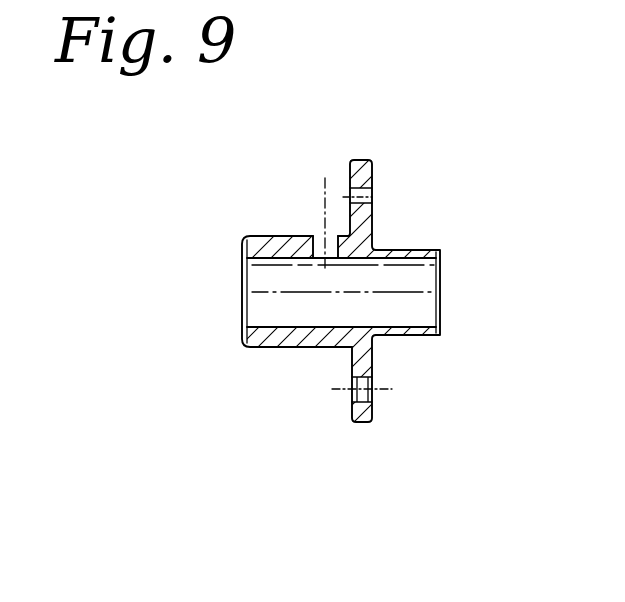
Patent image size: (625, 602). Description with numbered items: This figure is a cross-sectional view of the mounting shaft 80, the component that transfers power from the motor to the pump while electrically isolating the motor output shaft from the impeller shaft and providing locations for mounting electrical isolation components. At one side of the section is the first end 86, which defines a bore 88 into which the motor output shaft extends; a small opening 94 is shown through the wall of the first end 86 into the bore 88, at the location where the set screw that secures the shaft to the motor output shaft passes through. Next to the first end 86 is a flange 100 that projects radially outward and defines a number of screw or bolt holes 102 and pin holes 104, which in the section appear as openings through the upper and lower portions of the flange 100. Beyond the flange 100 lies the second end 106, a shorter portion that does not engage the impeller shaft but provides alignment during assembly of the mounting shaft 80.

The mounting shaft 80 is at (352, 315).
The first end 86 is at (278, 343).
The bore 88 is at (258, 305).
The slot 94 is at (318, 236).
The flange 100 is at (372, 167).
The screw or bolt holes 102 is at (372, 396).
The pin holes 104 is at (372, 197).
The second end 106 is at (418, 337).